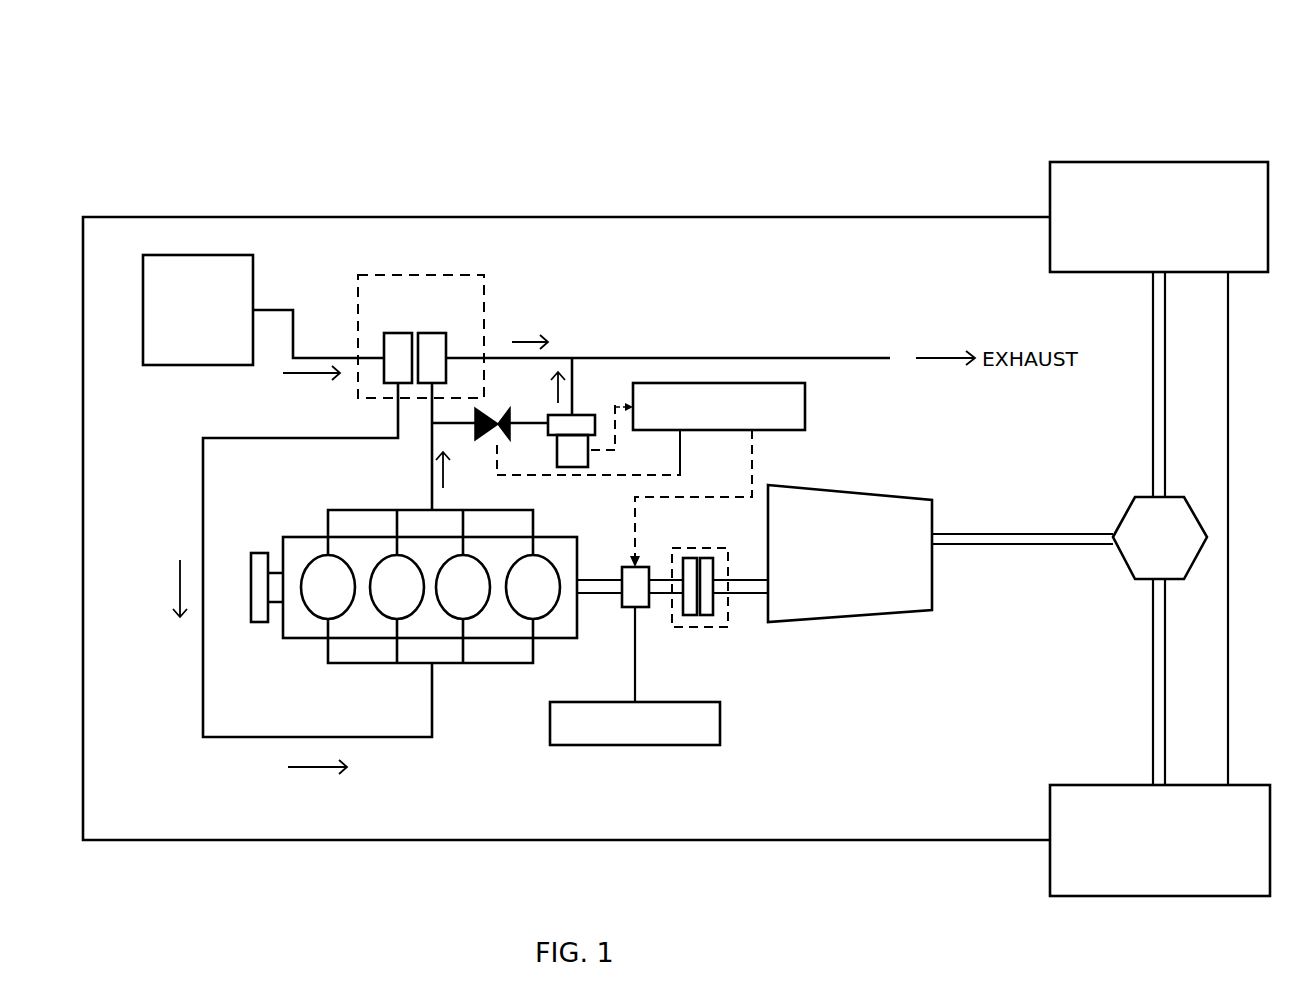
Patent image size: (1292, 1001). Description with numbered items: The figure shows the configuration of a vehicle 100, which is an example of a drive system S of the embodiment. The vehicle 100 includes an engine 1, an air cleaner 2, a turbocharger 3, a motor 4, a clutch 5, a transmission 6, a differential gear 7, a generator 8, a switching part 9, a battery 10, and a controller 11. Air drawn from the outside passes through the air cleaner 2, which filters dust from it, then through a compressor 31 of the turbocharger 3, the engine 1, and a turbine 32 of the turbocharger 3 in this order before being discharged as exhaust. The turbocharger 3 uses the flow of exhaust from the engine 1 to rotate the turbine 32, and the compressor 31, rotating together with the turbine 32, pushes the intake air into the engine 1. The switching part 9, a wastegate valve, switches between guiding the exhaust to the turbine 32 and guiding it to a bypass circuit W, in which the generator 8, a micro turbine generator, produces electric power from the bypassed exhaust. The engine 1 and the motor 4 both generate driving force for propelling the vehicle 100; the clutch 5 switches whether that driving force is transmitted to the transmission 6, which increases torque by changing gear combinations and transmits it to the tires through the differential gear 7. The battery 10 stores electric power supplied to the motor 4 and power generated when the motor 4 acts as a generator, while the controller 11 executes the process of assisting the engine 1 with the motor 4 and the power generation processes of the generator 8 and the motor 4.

The vehicle 100 is at (636, 204).
The drive system S is at (990, 116).
The engine 1 is at (549, 534).
The air cleaner 2 is at (253, 282).
The turbocharger 3 is at (452, 275).
The compressor 31 is at (392, 332).
The turbine 32 is at (433, 332).
The motor 4 is at (640, 568).
The clutch 5 is at (700, 546).
The transmission 6 is at (890, 492).
The differential gear 7 is at (1177, 495).
The generator 8 is at (585, 415).
The switching part 9 is at (507, 412).
The bypass circuit W is at (540, 426).
The battery 10 is at (687, 698).
The controller 11 is at (805, 395).